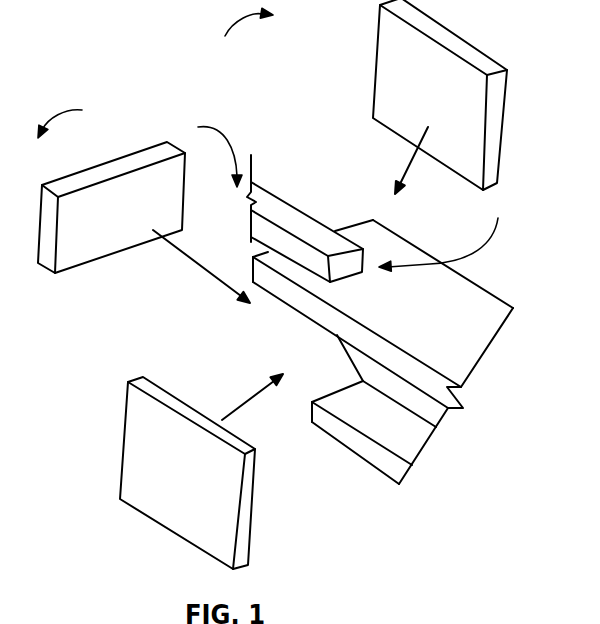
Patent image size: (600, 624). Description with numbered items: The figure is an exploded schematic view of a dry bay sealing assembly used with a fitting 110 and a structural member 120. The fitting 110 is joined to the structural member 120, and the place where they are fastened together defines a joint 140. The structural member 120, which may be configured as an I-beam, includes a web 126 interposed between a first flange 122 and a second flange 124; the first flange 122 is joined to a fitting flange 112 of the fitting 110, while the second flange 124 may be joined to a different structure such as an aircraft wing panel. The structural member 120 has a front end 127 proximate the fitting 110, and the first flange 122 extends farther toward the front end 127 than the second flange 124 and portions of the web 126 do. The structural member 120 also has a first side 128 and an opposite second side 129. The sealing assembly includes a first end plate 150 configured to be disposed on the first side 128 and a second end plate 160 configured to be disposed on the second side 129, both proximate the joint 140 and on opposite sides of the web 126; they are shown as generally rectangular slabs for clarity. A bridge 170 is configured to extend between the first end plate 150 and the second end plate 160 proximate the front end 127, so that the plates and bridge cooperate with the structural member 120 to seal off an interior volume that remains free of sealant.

The fitting 110 is at (284, 199).
The fitting flange 112 is at (361, 260).
The structural member 120 is at (508, 308).
The first flange 122 is at (300, 302).
The second flange 124 is at (355, 448).
The web 126 is at (357, 370).
The front end 127 is at (197, 150).
The first side 128 is at (84, 118).
The second side 129 is at (235, 39).
The joint 140 is at (448, 232).
The first end plate 150 is at (253, 521).
The second end plate 160 is at (413, 22).
The bridge 170 is at (72, 268).